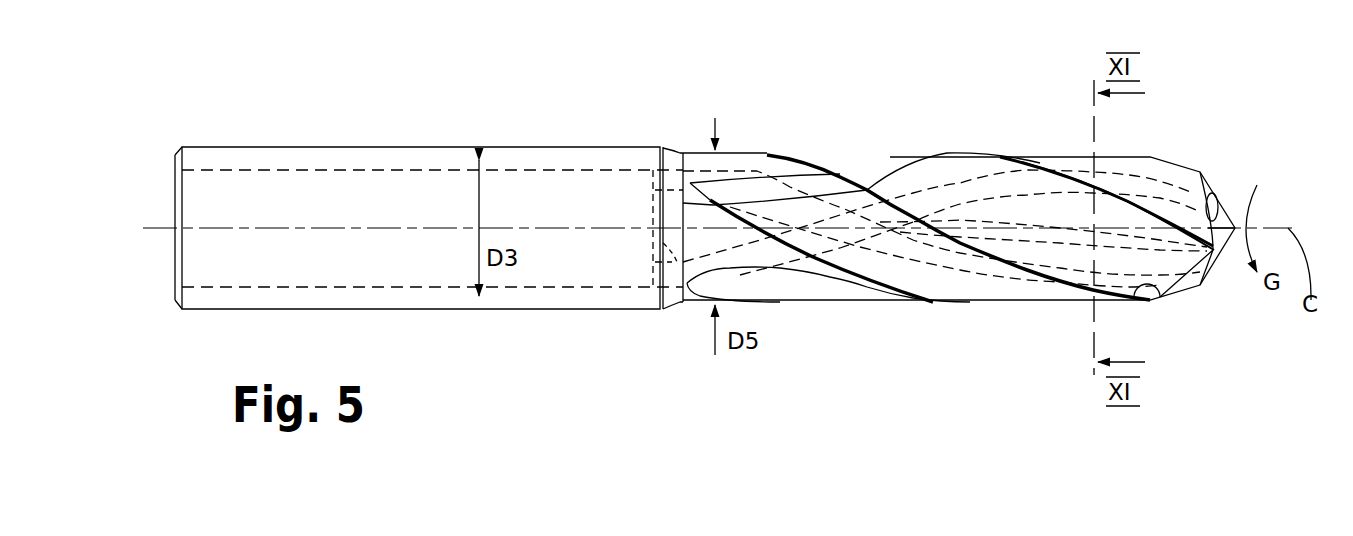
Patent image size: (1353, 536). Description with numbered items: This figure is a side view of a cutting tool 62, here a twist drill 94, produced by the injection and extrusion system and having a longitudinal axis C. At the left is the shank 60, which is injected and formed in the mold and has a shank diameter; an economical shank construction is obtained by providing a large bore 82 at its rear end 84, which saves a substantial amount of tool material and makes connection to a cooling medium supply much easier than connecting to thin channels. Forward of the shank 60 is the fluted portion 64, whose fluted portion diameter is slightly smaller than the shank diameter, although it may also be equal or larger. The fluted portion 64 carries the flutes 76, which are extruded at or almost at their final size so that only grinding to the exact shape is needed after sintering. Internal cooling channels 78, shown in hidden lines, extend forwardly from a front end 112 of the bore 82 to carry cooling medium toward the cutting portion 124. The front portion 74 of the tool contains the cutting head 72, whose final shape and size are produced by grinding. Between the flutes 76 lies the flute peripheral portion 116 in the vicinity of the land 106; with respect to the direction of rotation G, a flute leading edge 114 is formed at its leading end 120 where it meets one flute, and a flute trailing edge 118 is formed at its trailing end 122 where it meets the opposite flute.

The shank 60 is at (376, 143).
The large bore 82 is at (213, 247).
The rear end 84 is at (166, 272).
The fluted portion 64 is at (877, 150).
The flutes 76 is at (940, 170).
The internal cooling channels 78 is at (1020, 165).
The twist drill 94 is at (1130, 143).
The cutting tool 62 is at (1197, 150).
The cutting portion 124 is at (1228, 158).
The front portion 74 is at (1236, 178).
The front end of the bore 112 is at (676, 262).
The flute leading edge 114 is at (810, 275).
The land 106 is at (858, 285).
The leading end 120 is at (922, 285).
The flute peripheral portion 116 is at (968, 285).
The trailing end 122 is at (1022, 280).
The flute trailing edge 118 is at (1173, 293).
The cutting head 72 is at (1223, 263).